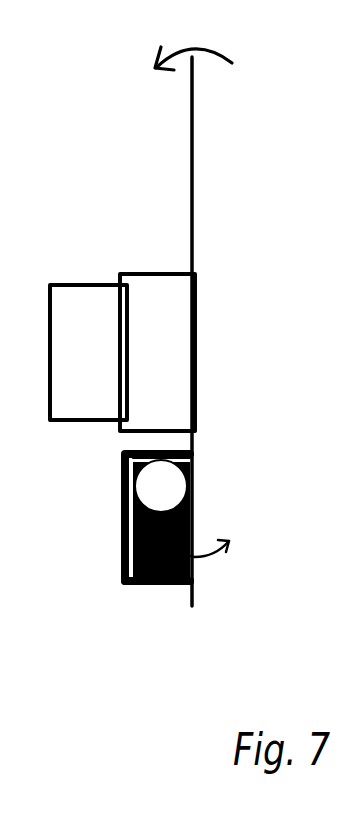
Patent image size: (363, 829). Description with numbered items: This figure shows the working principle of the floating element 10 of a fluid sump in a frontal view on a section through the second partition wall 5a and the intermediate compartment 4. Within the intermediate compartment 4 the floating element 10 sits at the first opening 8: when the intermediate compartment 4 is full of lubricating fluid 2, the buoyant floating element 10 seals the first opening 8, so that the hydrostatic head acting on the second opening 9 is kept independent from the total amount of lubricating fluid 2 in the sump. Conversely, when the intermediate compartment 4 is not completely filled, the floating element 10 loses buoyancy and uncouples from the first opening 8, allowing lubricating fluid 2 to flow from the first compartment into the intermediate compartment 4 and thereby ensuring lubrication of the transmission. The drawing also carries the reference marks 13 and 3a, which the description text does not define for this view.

The second partition wall 5a is at (194, 141).
The drive unit 13 is at (80, 283).
The housing wall 3a is at (121, 553).
The lubricating fluid 2 is at (135, 517).
The floating element 10 is at (170, 478).
The first opening 8 is at (165, 455).
The intermediate compartment 4 is at (155, 583).
The second opening 9 is at (182, 553).